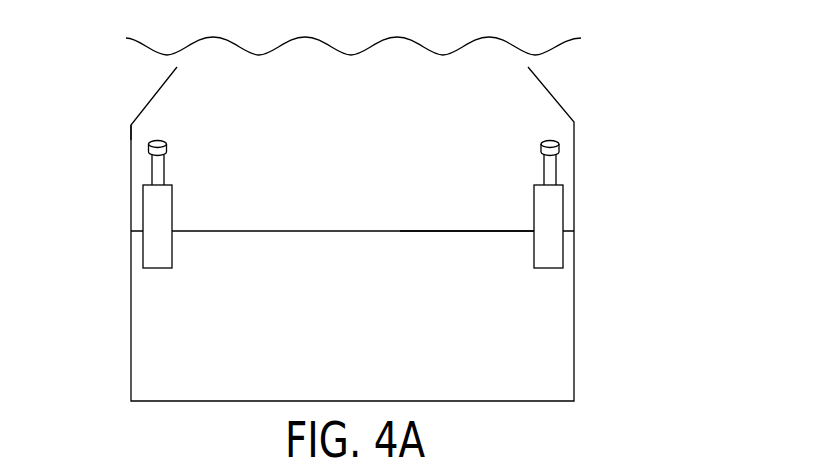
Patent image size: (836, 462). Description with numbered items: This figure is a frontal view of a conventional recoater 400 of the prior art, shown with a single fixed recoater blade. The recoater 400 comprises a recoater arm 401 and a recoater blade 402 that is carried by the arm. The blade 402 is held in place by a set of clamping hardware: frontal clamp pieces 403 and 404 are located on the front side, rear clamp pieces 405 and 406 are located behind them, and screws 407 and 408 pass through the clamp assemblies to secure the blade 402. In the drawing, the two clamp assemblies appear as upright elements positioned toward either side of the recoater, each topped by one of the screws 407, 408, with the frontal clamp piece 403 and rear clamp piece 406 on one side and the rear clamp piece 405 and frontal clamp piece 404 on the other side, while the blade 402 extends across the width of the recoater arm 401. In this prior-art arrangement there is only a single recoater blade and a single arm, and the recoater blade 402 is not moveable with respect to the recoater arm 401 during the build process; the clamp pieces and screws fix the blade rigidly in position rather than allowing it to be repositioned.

The recoater 400 is at (662, 175).
The recoater arm 401 is at (130, 125).
The recoater blade 402 is at (574, 316).
The frontal clamp piece 403 is at (172, 201).
The frontal clamp piece 404 is at (563, 217).
The rear clamp piece 405 is at (534, 232).
The rear clamp piece 406 is at (172, 231).
The screw 407 is at (167, 150).
The screw 408 is at (559, 151).